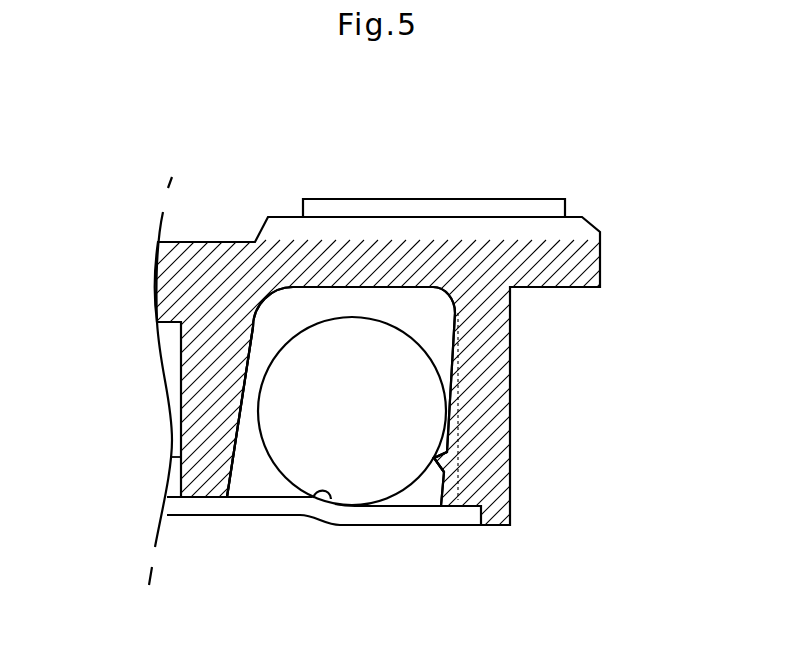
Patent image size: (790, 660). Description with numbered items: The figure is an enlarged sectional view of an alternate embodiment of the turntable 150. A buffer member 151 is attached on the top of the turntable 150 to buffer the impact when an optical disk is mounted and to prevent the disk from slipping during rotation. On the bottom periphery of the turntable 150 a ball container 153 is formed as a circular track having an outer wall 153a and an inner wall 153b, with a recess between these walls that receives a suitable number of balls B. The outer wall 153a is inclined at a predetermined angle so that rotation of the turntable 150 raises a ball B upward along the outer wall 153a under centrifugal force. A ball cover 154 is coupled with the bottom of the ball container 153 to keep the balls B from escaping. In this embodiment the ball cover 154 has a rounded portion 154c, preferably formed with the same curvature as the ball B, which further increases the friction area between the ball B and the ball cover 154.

The turntable 150 is at (604, 208).
The buffer member 151 is at (430, 208).
The ball container 153 is at (440, 318).
The outer wall 153a is at (440, 462).
The inner wall 153b is at (195, 441).
The ball cover 154 is at (408, 515).
The rounded portion 154c is at (312, 500).
The ball B is at (355, 322).